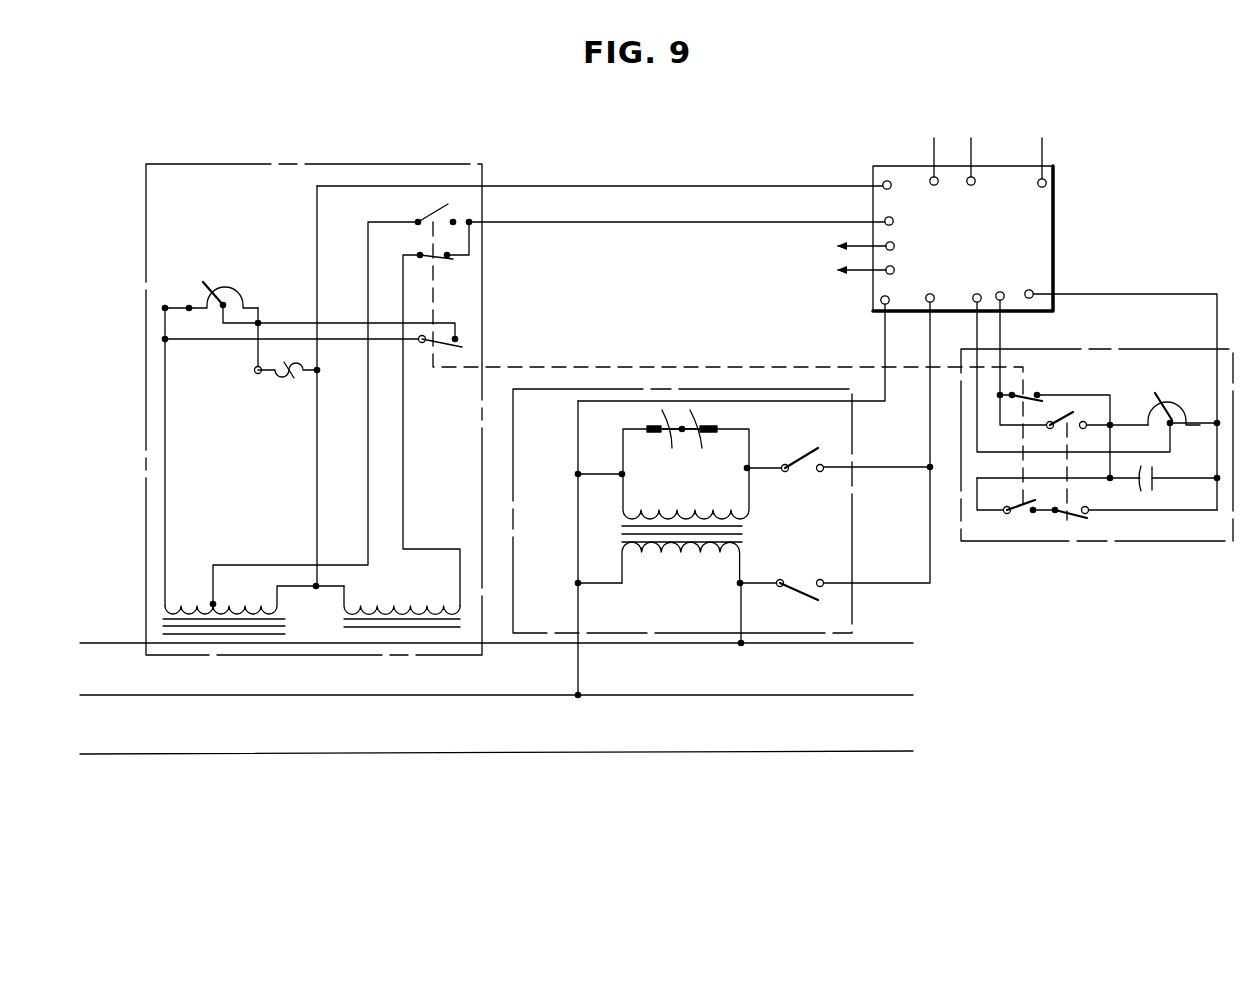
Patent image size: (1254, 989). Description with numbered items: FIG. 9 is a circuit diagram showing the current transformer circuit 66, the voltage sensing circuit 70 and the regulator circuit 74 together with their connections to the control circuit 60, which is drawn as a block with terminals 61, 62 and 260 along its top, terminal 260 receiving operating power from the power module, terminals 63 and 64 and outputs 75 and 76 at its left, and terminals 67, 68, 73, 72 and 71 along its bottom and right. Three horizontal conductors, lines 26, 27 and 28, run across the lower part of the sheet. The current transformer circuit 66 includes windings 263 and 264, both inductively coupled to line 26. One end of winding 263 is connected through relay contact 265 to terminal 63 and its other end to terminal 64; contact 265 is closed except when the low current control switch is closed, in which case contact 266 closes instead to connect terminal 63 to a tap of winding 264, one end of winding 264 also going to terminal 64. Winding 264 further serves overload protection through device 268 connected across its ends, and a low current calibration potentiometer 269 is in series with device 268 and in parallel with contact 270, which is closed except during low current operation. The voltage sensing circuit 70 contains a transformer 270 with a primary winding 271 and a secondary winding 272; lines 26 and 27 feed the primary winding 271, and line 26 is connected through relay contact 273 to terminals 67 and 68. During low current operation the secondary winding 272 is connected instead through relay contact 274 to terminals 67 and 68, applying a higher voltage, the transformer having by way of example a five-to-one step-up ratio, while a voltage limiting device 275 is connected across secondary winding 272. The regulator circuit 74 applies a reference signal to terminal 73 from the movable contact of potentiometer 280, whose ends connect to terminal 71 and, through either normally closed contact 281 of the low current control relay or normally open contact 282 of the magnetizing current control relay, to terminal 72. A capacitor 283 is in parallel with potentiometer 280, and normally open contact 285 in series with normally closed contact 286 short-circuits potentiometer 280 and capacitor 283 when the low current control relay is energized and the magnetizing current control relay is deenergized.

The line 26 is at (633, 644).
The line 27 is at (665, 696).
The power line conductor 28 is at (678, 754).
The control circuit 60 is at (1046, 232).
The control circuit input terminal 61 is at (973, 177).
The control circuit input terminal 62 is at (934, 177).
The terminal 63 is at (886, 218).
The terminal 64 is at (883, 181).
The current transformer circuit 66 is at (489, 167).
The terminal 67 is at (881, 304).
The terminal 68 is at (928, 303).
The voltage sensing circuit 70 is at (728, 384).
The terminal 71 is at (1035, 292).
The terminal 72 is at (1003, 301).
The terminal 73 is at (975, 303).
The regulator circuit 74 is at (1061, 551).
The control output signal 75 is at (887, 244).
The control output signal 76 is at (887, 273).
The terminal 260 is at (1047, 183).
The winding 263 is at (370, 606).
The winding 264 is at (180, 606).
The relay contact 265 is at (452, 258).
The contact 266 is at (433, 212).
The device 268 is at (286, 378).
The low current calibration potentiometer 269 is at (236, 290).
The contact / transformer 270 is at (462, 336).
The primary winding 271 is at (681, 572).
The secondary winding 272 is at (686, 474).
The relay contact 273 is at (782, 590).
The relay contact 274 is at (838, 466).
The voltage limiting device 275 is at (697, 420).
The potentiometer 280 is at (1176, 402).
The normally closed contact 281 is at (1025, 397).
The normally open contact 282 is at (1072, 410).
The capacitor 283 is at (1152, 480).
The normally open contact 285 is at (1011, 514).
The normally closed contact 286 is at (1085, 518).